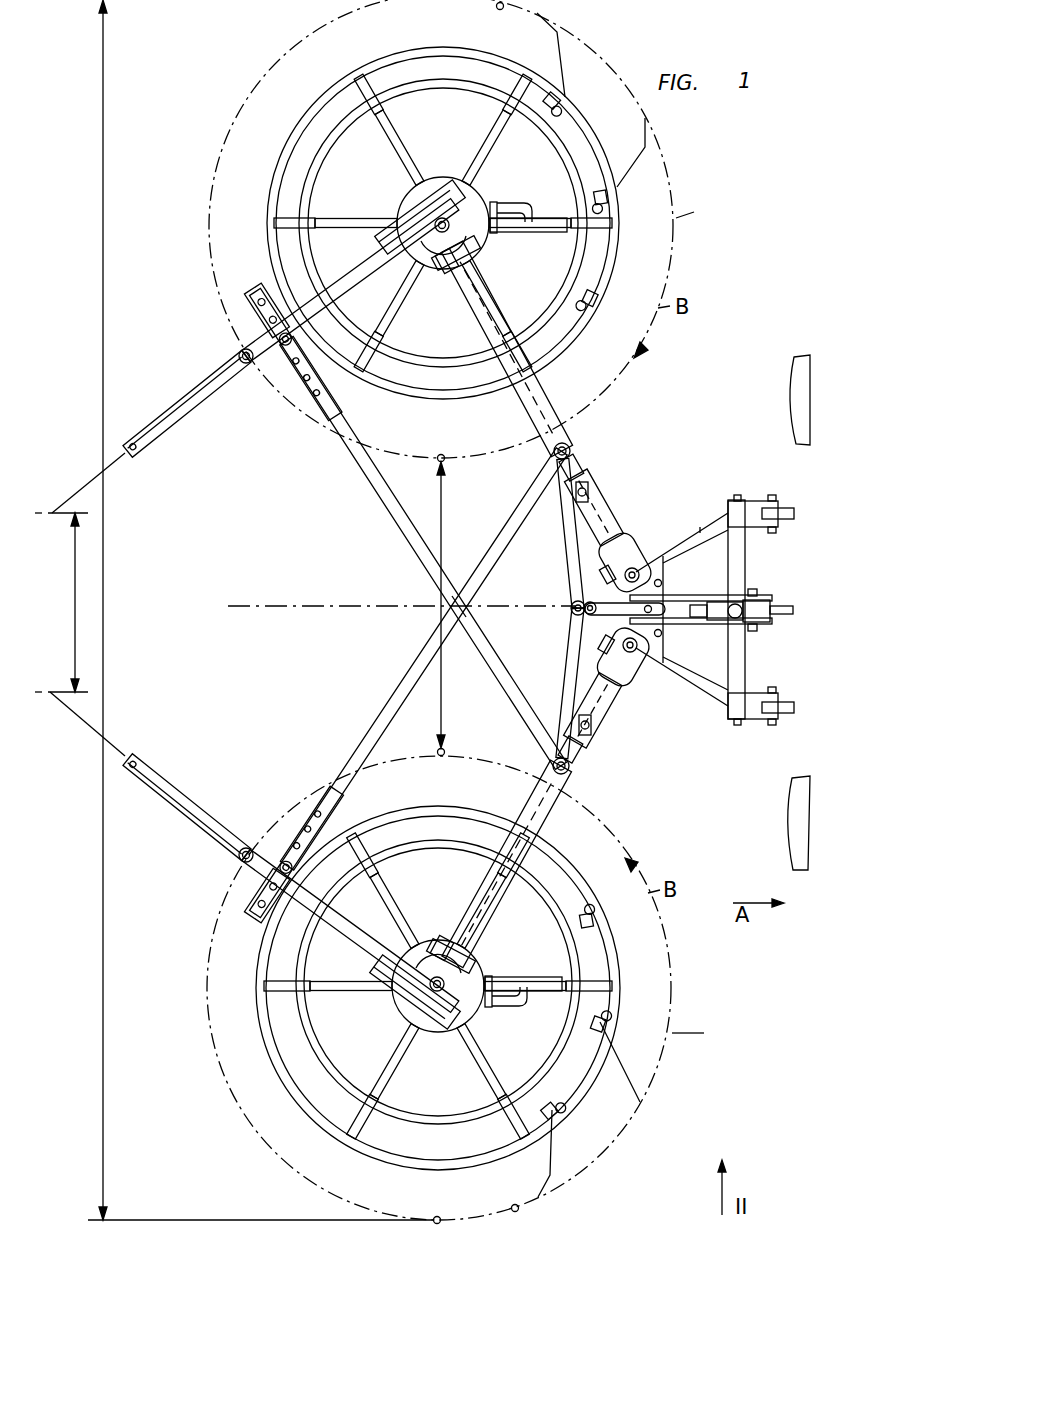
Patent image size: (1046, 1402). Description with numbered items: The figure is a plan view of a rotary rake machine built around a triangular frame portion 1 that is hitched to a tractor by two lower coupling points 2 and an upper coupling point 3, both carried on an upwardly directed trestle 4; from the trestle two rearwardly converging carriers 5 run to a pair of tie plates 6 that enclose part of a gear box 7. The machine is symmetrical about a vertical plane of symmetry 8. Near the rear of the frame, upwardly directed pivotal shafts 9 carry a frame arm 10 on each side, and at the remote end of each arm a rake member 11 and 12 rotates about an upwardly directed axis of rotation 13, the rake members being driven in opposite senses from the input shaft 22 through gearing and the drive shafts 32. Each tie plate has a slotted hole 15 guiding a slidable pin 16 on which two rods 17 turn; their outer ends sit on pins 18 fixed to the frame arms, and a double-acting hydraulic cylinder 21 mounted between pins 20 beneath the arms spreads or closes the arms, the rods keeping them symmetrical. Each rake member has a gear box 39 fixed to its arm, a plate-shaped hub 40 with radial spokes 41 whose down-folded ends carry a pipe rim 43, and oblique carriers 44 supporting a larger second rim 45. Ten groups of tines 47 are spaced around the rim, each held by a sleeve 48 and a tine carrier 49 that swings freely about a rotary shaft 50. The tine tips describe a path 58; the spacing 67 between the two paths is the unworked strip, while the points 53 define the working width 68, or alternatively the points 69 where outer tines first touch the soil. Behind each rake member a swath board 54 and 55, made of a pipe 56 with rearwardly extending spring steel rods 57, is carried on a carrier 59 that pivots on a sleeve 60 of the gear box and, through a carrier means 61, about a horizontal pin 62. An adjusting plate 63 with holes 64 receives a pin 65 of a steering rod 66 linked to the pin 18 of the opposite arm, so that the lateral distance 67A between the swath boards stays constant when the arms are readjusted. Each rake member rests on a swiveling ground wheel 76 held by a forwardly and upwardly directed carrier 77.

The frame portion 1 is at (694, 525).
The coupling points 2 is at (772, 494).
The upper coupling point 3 is at (762, 622).
The trestle 4 is at (746, 672).
The carriers 5 is at (672, 549).
The tie plates 6 is at (660, 668).
The gear box 7 is at (670, 628).
The plane of symmetry 8 is at (516, 606).
The pivotal shafts 9 is at (636, 565).
The frame arm 10 is at (606, 502).
The rake member 11 is at (700, 202).
The rake member 12 is at (704, 1032).
The axis of rotation 13 is at (498, 225).
The slotted hole 15 is at (570, 612).
The pin 16 is at (585, 616).
The rods 17 is at (572, 538).
The pins 18 is at (553, 453).
The pin 20 is at (590, 486).
The hydraulic cylinder 21 is at (578, 565).
The input shaft 22 is at (700, 596).
The drive shafts 32 is at (492, 342).
The gear box 39 is at (478, 196).
The hub 40 is at (480, 250).
The spokes 41 is at (440, 604).
The rim 43 is at (438, 82).
The carrier 44 is at (438, 606).
The second rim 45 is at (437, 398).
The groups of tines 47 is at (632, 150).
The sleeve 48 is at (608, 1022).
The tine carrier 49 is at (585, 908).
The rotary shaft 50 is at (560, 112).
The points 53 is at (440, 4).
The swath board 54 is at (186, 392).
The swath board 55 is at (198, 848).
The pipe 56 is at (246, 366).
The spring steel rods 57 is at (122, 460).
The tine path 58 is at (212, 212).
The carrier 59 is at (343, 280).
The sleeve 60 is at (443, 268).
The carrier means 61 is at (395, 215).
The pin 62 is at (441, 182).
The adjusting plate 63 is at (256, 294).
The holes 64 is at (252, 318).
The pin 65 is at (300, 375).
The steering rod 66 is at (450, 598).
The spacing 67 is at (455, 605).
The lateral distance 67A is at (76, 573).
The working width 68 is at (104, 650).
The points 69 is at (498, 8).
The ground wheel 76 is at (540, 236).
The carrier 77 is at (520, 201).